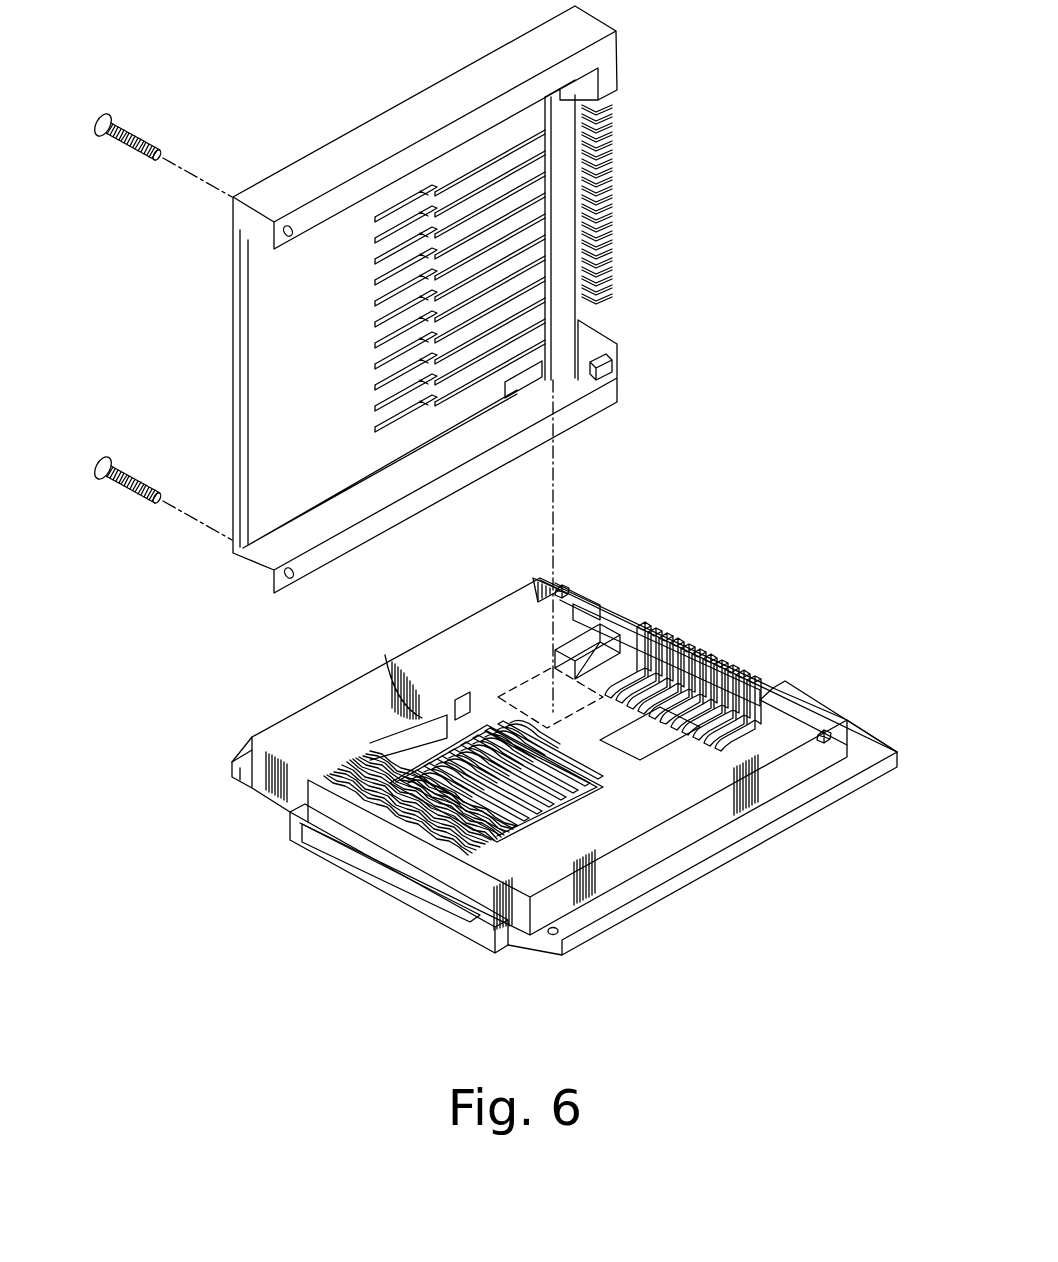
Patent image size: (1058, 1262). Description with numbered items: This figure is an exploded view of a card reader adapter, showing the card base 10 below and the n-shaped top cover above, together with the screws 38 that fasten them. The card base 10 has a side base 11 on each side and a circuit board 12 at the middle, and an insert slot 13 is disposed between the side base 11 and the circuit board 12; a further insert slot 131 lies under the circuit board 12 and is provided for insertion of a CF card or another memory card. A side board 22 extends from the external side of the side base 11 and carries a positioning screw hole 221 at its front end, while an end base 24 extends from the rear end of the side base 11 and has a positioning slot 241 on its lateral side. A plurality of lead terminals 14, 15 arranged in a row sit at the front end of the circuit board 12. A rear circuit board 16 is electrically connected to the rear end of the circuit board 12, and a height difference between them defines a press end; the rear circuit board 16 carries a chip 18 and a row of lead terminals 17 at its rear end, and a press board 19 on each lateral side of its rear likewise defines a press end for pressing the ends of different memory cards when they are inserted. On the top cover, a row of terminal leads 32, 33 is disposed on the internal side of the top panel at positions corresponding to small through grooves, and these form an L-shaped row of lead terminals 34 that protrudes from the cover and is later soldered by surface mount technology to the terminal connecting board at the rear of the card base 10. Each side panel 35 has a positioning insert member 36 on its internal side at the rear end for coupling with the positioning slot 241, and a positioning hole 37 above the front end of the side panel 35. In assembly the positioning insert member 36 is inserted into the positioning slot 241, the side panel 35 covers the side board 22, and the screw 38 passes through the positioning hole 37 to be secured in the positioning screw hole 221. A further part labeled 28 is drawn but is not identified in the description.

The card base 10 is at (797, 843).
The side base 11 is at (520, 615).
The circuit board 12 is at (388, 760).
The insert slot 13 is at (395, 877).
The insert slot 131 is at (458, 913).
The lead terminals 14 is at (350, 792).
The lead terminals 15 is at (445, 745).
The rear circuit board 16 is at (642, 758).
The lead terminals 17 is at (654, 688).
The chip 18 is at (530, 700).
The press board 19 is at (622, 640).
The side board 22 is at (673, 868).
The positioning screw hole 221 is at (560, 932).
The end base 24 is at (787, 697).
The positioning slot 241 is at (830, 734).
The side flange 28 is at (292, 810).
The terminal leads 32 is at (432, 190).
The terminal leads 33 is at (380, 214).
The lead terminals 34 is at (612, 118).
The side panel 35 is at (572, 415).
The positioning insert member 36 is at (606, 372).
The positioning hole 37 is at (290, 579).
The screw 38 is at (100, 457).